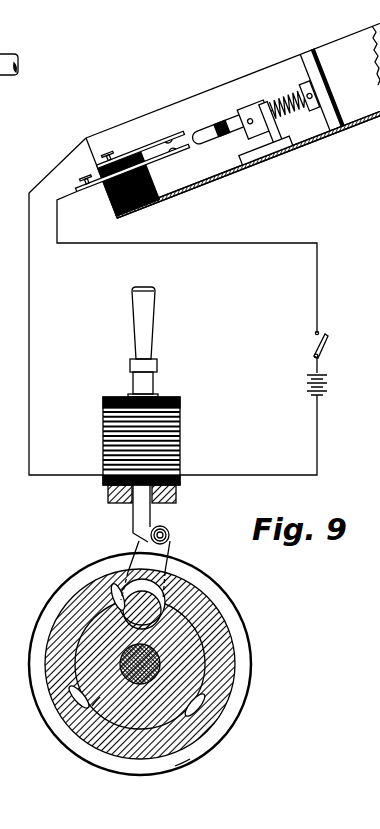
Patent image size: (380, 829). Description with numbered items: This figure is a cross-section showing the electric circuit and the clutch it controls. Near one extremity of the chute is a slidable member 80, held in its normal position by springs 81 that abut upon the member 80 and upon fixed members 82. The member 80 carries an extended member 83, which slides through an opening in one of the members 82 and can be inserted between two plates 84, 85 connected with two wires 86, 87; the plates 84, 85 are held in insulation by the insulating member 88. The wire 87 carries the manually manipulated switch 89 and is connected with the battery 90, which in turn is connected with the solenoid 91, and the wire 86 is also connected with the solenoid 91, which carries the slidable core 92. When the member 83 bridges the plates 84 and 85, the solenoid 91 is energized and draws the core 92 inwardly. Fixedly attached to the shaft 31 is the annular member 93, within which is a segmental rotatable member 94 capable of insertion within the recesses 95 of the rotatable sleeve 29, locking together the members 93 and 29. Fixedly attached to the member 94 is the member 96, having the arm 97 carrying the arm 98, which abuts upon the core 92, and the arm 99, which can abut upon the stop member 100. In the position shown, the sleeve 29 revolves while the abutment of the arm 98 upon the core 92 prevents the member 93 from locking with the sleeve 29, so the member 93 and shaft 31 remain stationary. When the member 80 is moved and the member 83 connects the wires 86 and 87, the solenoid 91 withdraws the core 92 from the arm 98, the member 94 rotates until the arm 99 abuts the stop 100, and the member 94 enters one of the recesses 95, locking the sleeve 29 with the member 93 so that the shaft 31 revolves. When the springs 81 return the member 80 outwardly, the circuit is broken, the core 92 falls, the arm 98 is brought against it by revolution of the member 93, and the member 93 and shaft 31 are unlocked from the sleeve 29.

The rotatable sleeve 29 is at (223, 655).
The shaft 31 is at (98, 700).
The slidable member 80 is at (333, 101).
The springs 81 is at (280, 93).
The fixed members 82 is at (290, 148).
The extended member 83 is at (207, 143).
The plate 84 is at (151, 141).
The plate 85 is at (164, 161).
The wire 86 is at (46, 185).
The wire 87 is at (57, 217).
The insulating member 88 is at (138, 210).
The manually manipulated switch 89 is at (313, 344).
The battery 90 is at (309, 377).
The solenoid 91 is at (181, 436).
The slidable core 92 is at (132, 522).
The annular member 93 is at (192, 668).
The segmental rotatable member 94 is at (163, 590).
The recesses 95 is at (112, 575).
The member 96 is at (87, 598).
The arm 97 is at (168, 548).
The arm 98 is at (165, 530).
The arm 99 is at (102, 642).
The stop member 100 is at (183, 750).